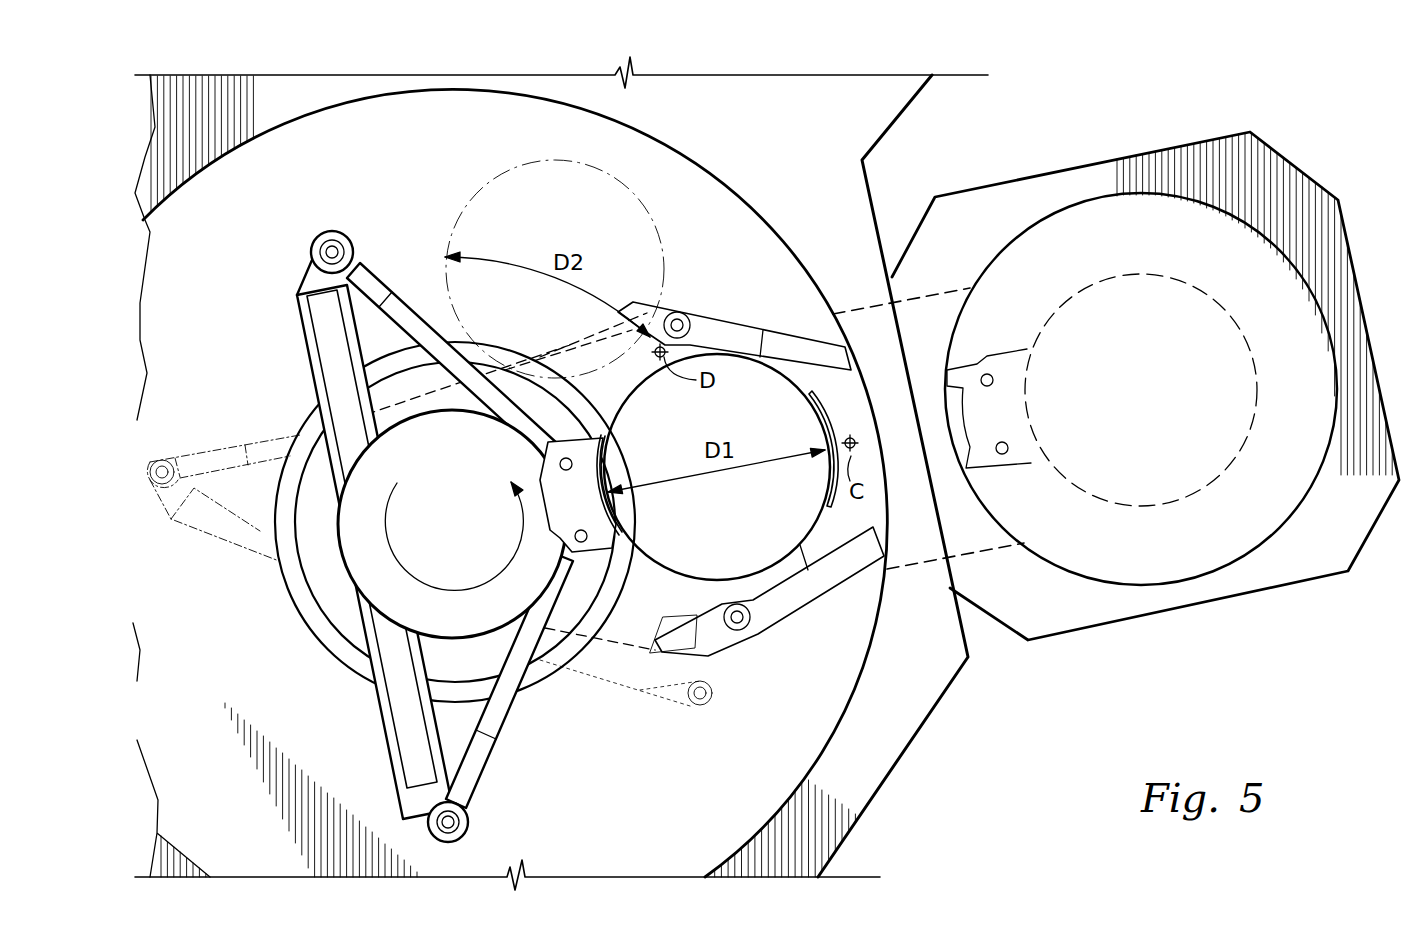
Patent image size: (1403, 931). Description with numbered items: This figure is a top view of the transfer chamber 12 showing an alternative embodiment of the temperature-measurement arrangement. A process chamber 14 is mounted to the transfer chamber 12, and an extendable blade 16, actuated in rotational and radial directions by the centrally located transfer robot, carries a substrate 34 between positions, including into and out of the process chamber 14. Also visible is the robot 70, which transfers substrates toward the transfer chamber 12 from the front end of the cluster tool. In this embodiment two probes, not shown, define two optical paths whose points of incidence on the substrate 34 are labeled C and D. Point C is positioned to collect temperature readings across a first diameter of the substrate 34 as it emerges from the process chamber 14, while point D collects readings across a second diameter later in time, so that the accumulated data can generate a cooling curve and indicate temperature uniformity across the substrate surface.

The transfer chamber 12 is at (893, 768).
The process chamber 14 is at (1192, 605).
The extendable blade 16 is at (812, 401).
The substrate 34 is at (808, 507).
The robot 70 is at (318, 640).